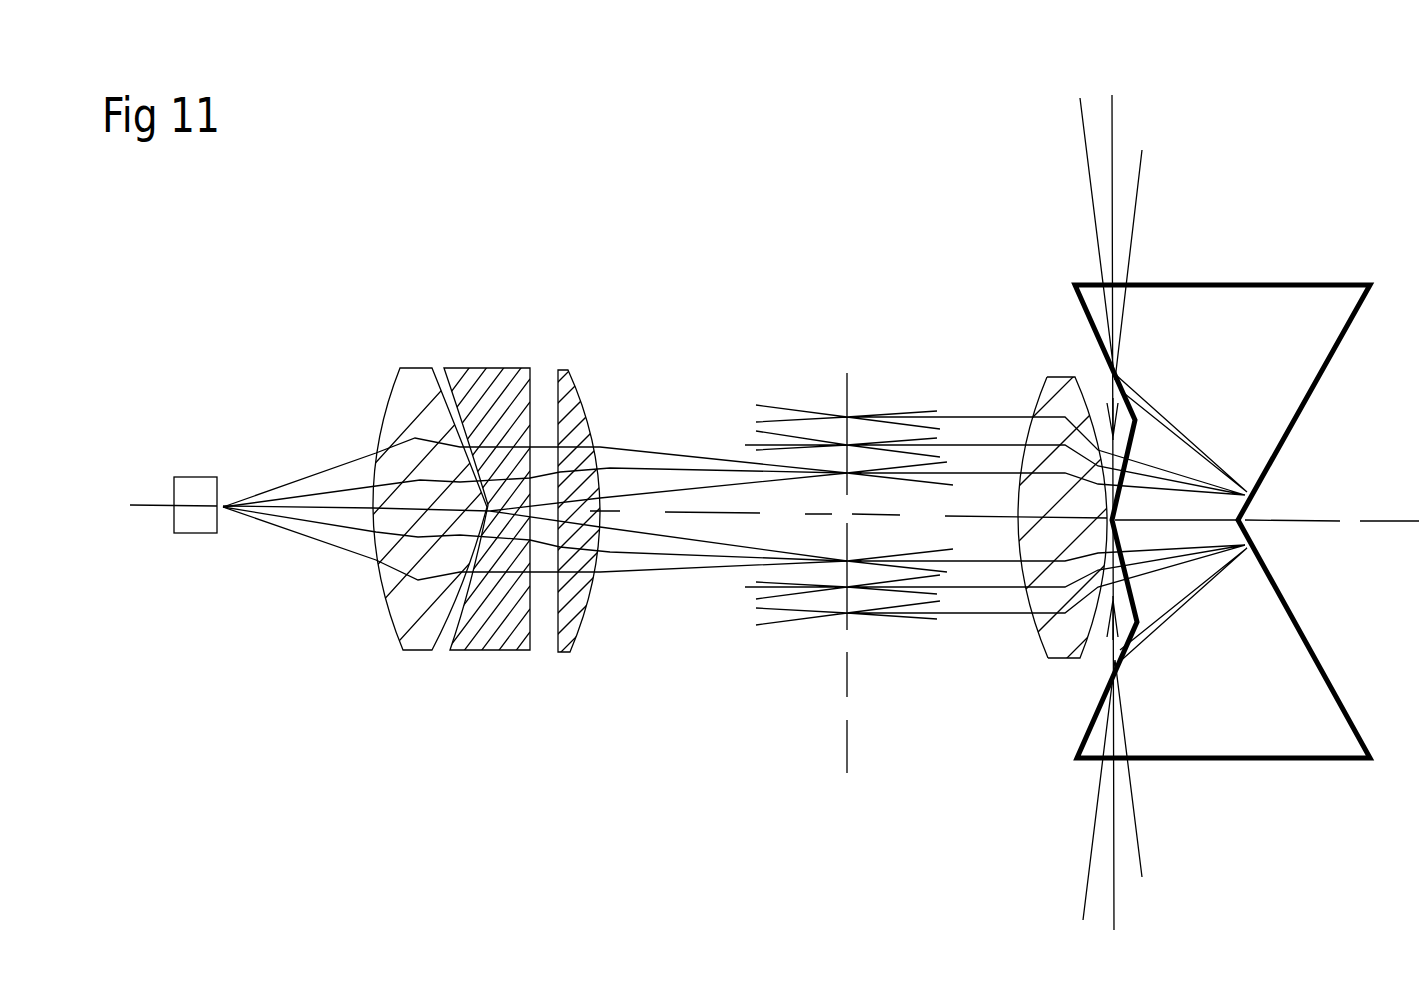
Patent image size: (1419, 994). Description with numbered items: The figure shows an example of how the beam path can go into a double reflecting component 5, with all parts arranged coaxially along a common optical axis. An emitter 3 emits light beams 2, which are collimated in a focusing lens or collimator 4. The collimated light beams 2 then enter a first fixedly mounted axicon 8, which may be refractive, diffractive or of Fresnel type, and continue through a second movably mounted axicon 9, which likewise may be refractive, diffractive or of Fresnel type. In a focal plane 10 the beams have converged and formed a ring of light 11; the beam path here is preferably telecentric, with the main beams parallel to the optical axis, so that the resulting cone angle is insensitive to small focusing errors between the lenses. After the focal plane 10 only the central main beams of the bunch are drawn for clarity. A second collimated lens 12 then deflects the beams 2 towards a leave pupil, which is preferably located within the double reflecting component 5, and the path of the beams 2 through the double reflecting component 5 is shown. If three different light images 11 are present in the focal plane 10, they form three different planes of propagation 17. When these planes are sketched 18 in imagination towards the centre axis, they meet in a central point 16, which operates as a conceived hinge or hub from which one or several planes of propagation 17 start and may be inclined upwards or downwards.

The light beams 2 is at (313, 470).
The emitter 3 is at (193, 477).
The focusing lens or collimator 4 is at (407, 367).
The double reflecting component 5 is at (1287, 310).
The first fixedly mounted axicon 8 is at (492, 367).
The second movably mounted axicon 9 is at (570, 369).
The focal plane 10 is at (847, 373).
The ring of light 11 is at (850, 567).
The second collimated lens 12 is at (1068, 376).
The central point 16 is at (1037, 407).
The planes of propagation 17 is at (1110, 95).
The sketched planes 18 is at (1105, 383).